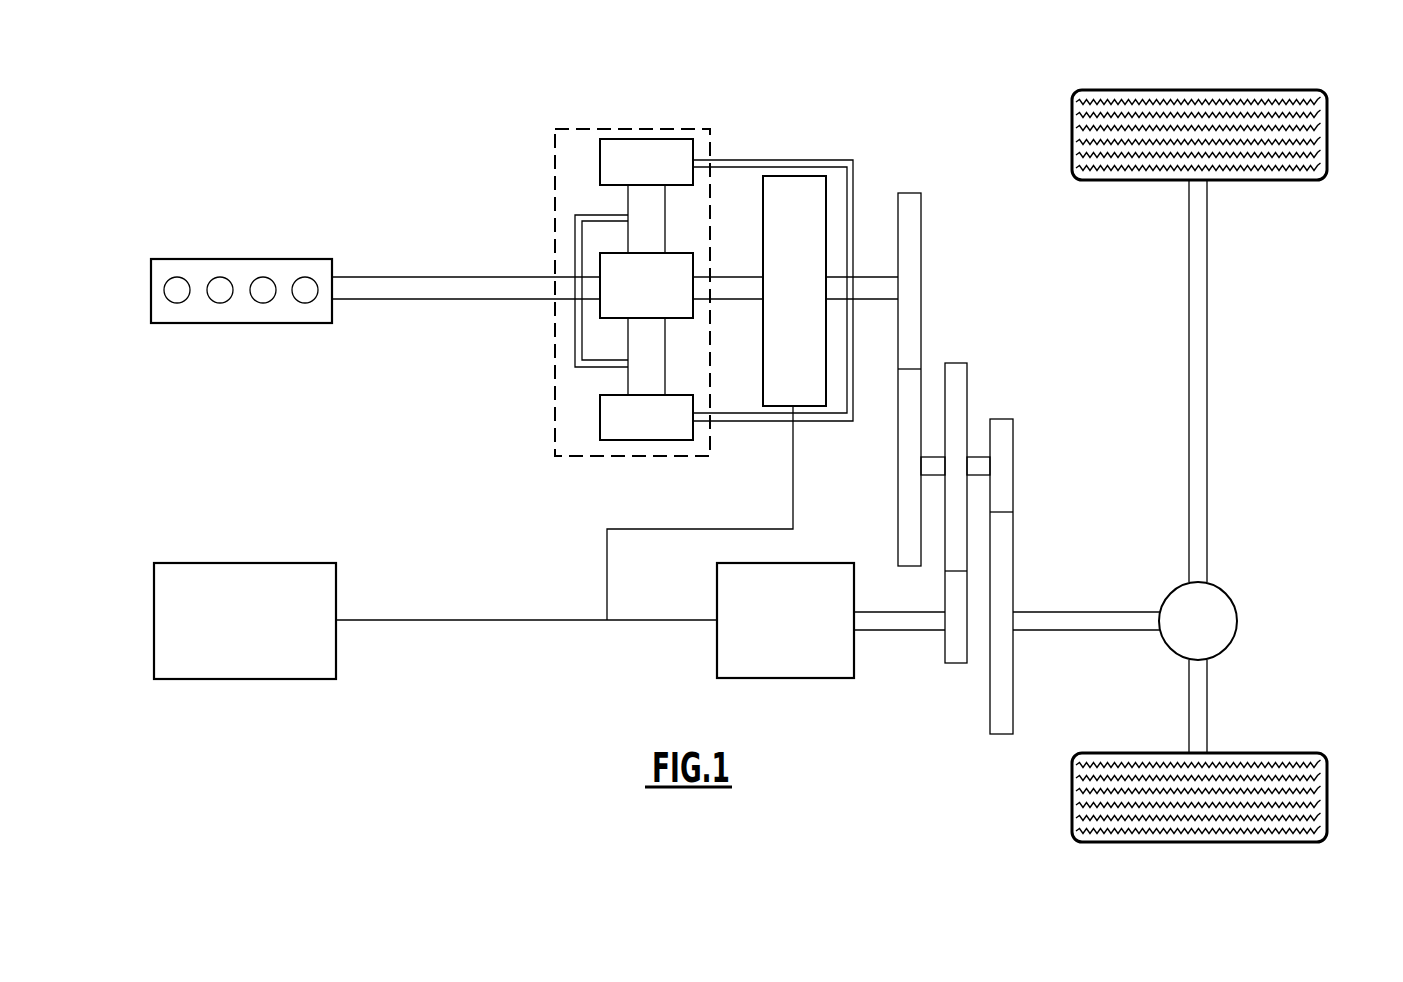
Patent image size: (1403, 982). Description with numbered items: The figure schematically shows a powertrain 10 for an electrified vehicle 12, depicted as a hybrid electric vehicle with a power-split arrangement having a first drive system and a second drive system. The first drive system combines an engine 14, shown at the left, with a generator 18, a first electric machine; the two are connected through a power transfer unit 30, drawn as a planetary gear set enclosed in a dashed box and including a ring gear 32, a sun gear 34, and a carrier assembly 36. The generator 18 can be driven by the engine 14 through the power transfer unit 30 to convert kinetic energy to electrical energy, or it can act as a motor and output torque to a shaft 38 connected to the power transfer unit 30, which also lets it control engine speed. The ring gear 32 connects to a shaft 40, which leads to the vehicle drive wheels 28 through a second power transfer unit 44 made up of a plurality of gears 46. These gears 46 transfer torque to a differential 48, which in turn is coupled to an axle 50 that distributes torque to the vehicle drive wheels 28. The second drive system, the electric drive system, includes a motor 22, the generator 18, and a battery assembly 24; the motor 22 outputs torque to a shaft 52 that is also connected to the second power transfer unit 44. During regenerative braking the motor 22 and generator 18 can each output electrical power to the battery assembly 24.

The powertrain 10 is at (392, 152).
The electrified vehicle 12 is at (820, 82).
The engine 14 is at (171, 259).
The generator 18 is at (770, 176).
The motor 22 is at (854, 662).
The battery assembly 24 is at (173, 563).
The vehicle drive wheels 28 is at (1327, 797).
The power transfer unit 30 is at (553, 410).
The ring gear 32 is at (600, 160).
The sun gear 34 is at (600, 263).
The carrier assembly 36 is at (575, 350).
The shaft 38 is at (728, 277).
The shaft 40 is at (873, 277).
The second power transfer unit 44 is at (995, 325).
The gears 46 is at (921, 330).
The differential 48 is at (1233, 642).
The axle 50 is at (1207, 370).
The shaft 52 is at (910, 630).